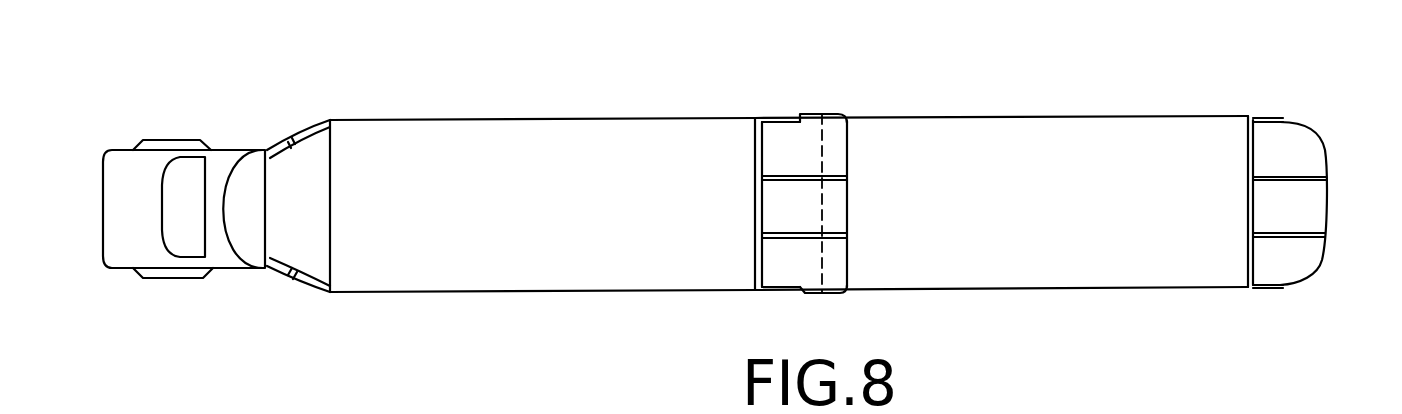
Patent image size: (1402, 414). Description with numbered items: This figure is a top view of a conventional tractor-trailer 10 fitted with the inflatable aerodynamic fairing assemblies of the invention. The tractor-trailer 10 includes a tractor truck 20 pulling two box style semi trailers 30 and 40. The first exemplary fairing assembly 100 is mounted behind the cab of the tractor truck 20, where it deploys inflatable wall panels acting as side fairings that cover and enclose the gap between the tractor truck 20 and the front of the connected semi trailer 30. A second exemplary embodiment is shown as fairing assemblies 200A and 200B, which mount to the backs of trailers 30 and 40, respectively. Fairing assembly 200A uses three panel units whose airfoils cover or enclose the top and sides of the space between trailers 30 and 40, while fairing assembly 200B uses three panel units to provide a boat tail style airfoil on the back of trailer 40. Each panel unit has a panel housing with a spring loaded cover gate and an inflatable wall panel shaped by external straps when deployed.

The tractor-trailer 10 is at (175, 115).
The tractor truck 20 is at (213, 170).
The semi trailer 30 is at (565, 138).
The semi trailer 40 is at (1025, 250).
The inflatable aerodynamic fairing assembly 100 is at (296, 115).
The fairing assembly 200A is at (788, 110).
The fairing assembly 200B is at (1286, 110).